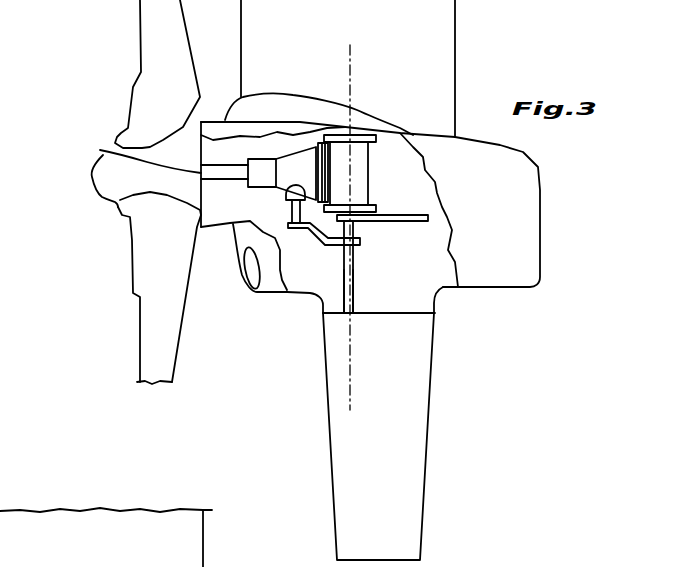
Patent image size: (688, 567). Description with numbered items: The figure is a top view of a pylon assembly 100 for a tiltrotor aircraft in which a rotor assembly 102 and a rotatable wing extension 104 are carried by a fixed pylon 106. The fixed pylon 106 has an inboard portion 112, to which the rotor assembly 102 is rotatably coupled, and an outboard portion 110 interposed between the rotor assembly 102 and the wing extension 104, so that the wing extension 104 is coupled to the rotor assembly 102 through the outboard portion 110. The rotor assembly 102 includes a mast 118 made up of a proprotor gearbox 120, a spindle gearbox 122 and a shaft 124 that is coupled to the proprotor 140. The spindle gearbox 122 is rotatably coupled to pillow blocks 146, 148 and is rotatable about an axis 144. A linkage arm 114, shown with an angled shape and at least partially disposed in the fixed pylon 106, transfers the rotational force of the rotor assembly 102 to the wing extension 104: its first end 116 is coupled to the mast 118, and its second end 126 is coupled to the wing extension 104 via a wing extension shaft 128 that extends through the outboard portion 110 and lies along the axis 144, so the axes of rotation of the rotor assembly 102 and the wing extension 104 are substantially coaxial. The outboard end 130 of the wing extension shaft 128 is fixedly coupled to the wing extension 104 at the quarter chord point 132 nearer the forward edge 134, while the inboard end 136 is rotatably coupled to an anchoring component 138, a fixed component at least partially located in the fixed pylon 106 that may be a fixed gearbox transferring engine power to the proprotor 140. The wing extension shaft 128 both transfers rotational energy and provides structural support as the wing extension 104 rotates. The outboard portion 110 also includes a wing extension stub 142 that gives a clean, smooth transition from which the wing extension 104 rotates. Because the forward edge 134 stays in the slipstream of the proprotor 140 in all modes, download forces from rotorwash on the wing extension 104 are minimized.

The pylon assembly 100 is at (492, 60).
The rotor assembly 102 is at (213, 121).
The wing extension 104 is at (424, 478).
The fixed pylon 106 is at (532, 202).
The outboard portion 110 is at (268, 285).
The inboard portion 112 is at (253, 128).
The linkage arm 114 is at (300, 228).
The first end 116 is at (313, 227).
The mast 118 is at (222, 182).
The proprotor gearbox 120 is at (310, 157).
The spindle gearbox 122 is at (366, 173).
The shaft 124 is at (100, 150).
The second end 126 is at (355, 250).
The wing extension shaft 128 is at (355, 268).
The outboard end 130 is at (357, 312).
The quarter chord point 132 is at (354, 316).
The forward edge 134 is at (329, 450).
The inboard end 136 is at (362, 240).
The anchoring component 138 is at (428, 218).
The proprotor 140 is at (100, 183).
The wing extension stub 142 is at (438, 303).
The axis 144 is at (352, 70).
The pillow block 146 is at (345, 127).
The pillow block 148 is at (377, 209).